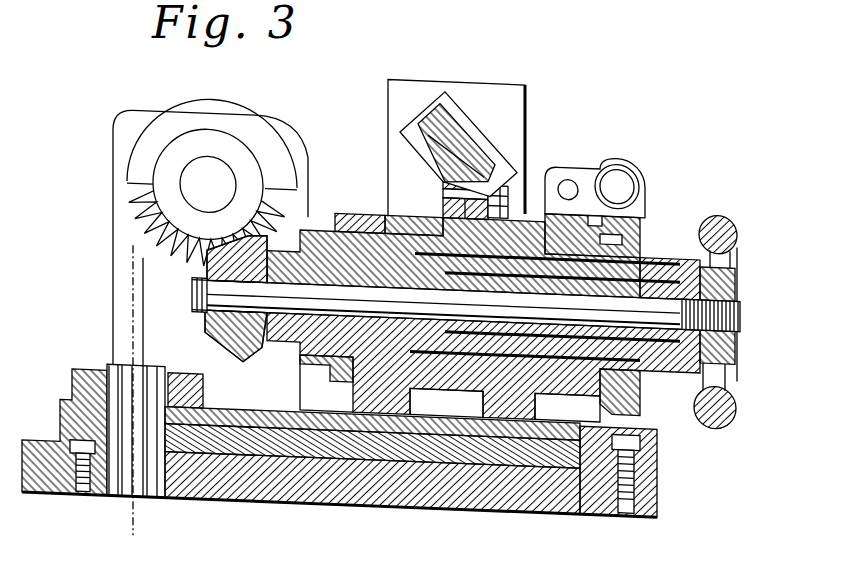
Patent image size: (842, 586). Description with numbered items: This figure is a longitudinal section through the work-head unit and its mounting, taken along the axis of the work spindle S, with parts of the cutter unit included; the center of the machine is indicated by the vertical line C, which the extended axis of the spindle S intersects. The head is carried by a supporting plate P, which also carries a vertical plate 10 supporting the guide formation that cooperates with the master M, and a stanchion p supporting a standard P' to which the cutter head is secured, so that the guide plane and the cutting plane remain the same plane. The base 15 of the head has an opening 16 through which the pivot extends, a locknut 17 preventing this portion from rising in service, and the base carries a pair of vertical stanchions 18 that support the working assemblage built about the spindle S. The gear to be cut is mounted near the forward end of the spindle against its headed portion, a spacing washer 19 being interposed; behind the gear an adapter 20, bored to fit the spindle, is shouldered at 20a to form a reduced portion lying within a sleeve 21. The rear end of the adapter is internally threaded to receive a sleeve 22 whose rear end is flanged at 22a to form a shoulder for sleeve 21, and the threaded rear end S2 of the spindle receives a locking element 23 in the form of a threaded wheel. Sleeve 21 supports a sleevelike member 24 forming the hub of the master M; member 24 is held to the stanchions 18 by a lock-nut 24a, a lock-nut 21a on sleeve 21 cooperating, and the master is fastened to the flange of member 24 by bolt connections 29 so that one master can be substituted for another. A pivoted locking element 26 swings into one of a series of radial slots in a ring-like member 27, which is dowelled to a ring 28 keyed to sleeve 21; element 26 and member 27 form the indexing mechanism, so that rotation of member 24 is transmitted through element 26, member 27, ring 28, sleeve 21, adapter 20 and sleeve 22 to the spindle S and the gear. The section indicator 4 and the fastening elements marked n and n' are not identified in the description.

The section line 4- 4 is at (523, 215).
The vertical plate 10 is at (456, 136).
The master M is at (458, 142).
The base 15 is at (455, 418).
The opening 16 is at (208, 404).
The locknut 17 is at (75, 370).
The vertical stanchions 18 is at (400, 389).
The spacing washer 19 is at (200, 266).
The adapter 20 is at (283, 331).
The shoulder 20a is at (303, 225).
The sleeve 21 is at (372, 233).
The lock-nut 21a is at (326, 383).
The sleeve 22 is at (645, 355).
The flange 22a is at (688, 245).
The locking element 23 is at (733, 318).
The sleevelike member 24 is at (427, 206).
The lock-nut 24a is at (353, 218).
The pivoted locking element 26 is at (588, 146).
The ring-like member 27 is at (680, 234).
The ring 28 is at (640, 196).
The bolt connections 29 is at (508, 176).
The center line of the machine C is at (137, 511).
The supporting plate P is at (339, 496).
The standard P' is at (92, 295).
The work spindle S is at (192, 280).
The threaded rear end S2 is at (740, 290).
The screw n is at (87, 486).
The screw n' is at (634, 472).
The stanchion p is at (50, 416).